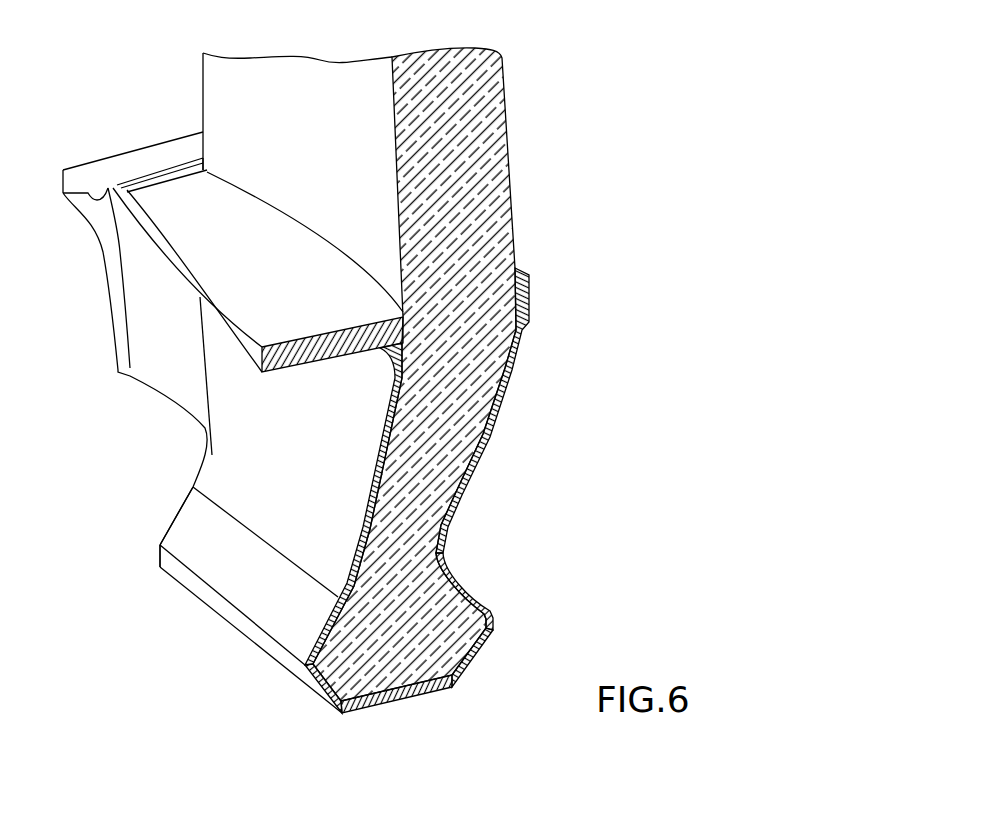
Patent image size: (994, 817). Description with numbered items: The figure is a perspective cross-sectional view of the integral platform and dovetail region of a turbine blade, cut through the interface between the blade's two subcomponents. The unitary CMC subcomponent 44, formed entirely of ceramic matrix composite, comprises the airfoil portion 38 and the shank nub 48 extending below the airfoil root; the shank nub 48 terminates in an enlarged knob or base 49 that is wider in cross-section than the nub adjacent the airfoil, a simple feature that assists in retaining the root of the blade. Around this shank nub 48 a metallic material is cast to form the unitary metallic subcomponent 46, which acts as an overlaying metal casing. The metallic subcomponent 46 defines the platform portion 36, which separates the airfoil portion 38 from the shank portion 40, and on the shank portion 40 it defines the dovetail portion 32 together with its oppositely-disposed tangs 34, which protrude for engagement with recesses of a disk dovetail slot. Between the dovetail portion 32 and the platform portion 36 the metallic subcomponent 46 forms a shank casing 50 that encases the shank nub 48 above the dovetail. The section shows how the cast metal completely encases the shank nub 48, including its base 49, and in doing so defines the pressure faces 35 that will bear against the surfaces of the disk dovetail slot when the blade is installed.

The dovetail portion 32 is at (246, 664).
The tangs 34 is at (322, 697).
The pressure faces 35 is at (210, 557).
The platform portion 36 is at (160, 155).
The airfoil portion 38 is at (506, 123).
The shank portion 40 is at (168, 496).
The unitary CMC subcomponent 44 is at (339, 43).
The unitary metallic subcomponent 46 is at (534, 367).
The shank nub 48 is at (488, 432).
The base 49 is at (432, 604).
The shank casing 50 is at (205, 446).